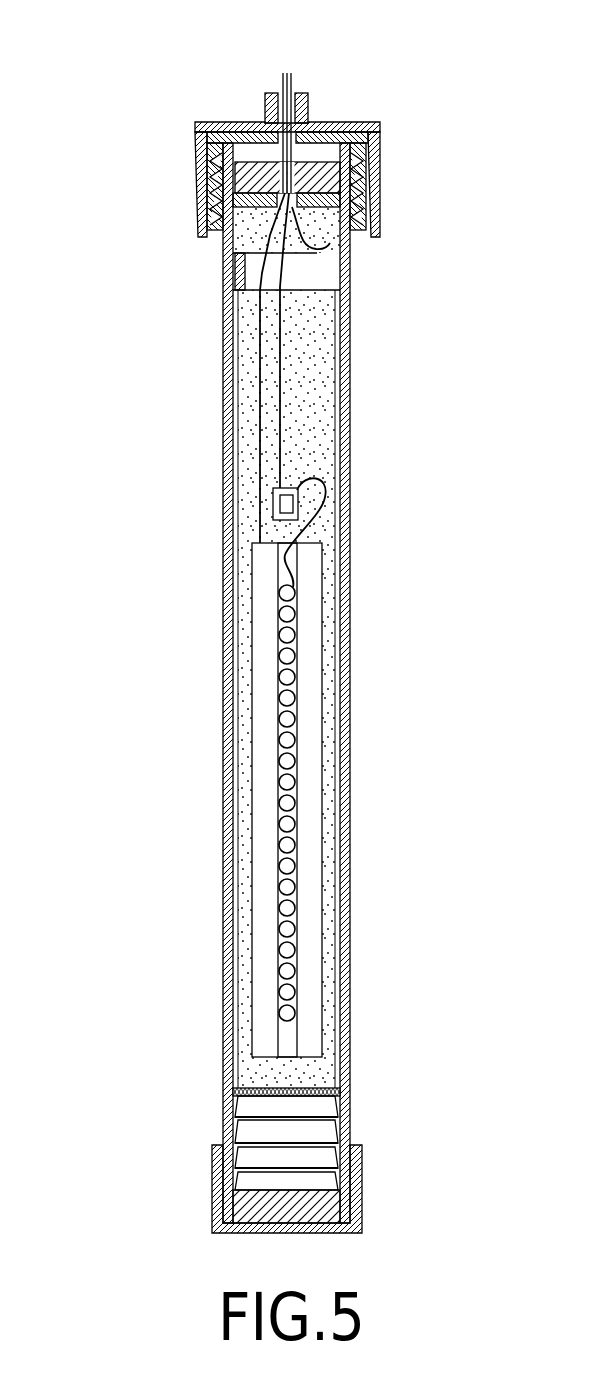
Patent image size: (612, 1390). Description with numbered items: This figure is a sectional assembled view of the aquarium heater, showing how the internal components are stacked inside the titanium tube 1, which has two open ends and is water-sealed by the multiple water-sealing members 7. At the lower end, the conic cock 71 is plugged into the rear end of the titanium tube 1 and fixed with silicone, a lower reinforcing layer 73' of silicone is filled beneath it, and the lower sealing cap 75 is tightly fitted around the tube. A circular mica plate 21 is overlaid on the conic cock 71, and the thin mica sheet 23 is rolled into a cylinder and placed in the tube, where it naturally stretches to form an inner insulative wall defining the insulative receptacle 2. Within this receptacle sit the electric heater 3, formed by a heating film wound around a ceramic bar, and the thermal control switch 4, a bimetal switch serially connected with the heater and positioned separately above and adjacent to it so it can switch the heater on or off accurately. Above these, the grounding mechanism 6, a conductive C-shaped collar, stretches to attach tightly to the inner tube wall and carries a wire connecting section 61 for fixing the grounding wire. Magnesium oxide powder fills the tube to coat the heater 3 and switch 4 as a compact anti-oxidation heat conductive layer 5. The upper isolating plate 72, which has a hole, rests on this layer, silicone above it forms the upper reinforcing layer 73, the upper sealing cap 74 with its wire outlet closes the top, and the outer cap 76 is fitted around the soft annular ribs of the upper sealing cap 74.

The water-sealing members 7 is at (177, 127).
The upper reinforcing layer 73 is at (236, 96).
The outer cap 76 is at (378, 133).
The upper sealing cap 74 is at (375, 174).
The upper isolating plate 72 is at (238, 197).
The wire connecting section 61 is at (362, 233).
The grounding mechanism 6 is at (238, 267).
The titanium tube 1 is at (223, 510).
The thin mica sheet 23 is at (337, 633).
The anti-oxidation heat conductive layer 5 is at (245, 528).
The thermal control switch 4 is at (293, 503).
The insulative receptacle 2 is at (317, 532).
The electric heater 3 is at (272, 660).
The mica plate 21 is at (277, 1088).
The conic cock 71 is at (315, 1107).
The lower reinforcing layer 73' is at (231, 1197).
The lower sealing cap 75 is at (358, 1190).